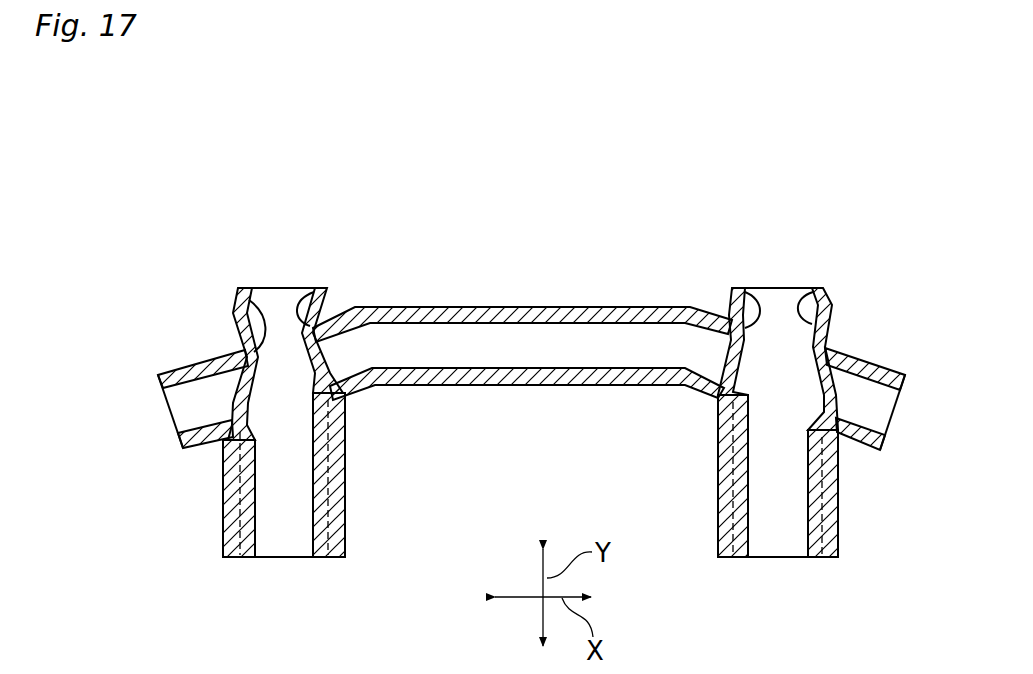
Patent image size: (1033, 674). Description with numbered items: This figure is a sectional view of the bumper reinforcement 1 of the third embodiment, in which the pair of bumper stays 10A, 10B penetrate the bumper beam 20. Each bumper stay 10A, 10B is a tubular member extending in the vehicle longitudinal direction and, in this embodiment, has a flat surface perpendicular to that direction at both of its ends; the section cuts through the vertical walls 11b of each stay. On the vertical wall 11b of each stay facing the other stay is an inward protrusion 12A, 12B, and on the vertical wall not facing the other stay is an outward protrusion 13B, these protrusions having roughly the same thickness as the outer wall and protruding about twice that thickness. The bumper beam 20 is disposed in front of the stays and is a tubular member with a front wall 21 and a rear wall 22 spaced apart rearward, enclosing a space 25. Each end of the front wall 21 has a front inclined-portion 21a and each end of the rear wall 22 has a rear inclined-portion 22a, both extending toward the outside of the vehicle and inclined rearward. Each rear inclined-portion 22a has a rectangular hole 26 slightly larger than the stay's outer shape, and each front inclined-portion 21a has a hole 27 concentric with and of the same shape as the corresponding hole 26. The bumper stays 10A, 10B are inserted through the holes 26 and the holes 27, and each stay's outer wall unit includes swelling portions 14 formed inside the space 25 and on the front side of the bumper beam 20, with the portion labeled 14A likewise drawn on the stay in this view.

The bumper reinforcement 1 is at (226, 210).
The bumper stay 10A is at (349, 500).
The bumper stay 10B is at (714, 510).
The vertical wall 11b is at (245, 558).
The inward protrusion 12A is at (347, 462).
The inward protrusion 12B is at (717, 462).
The outward protrusion 13B is at (840, 510).
The swelling portion 14 is at (238, 290).
The thick wall portion of first pipe member 14A is at (223, 508).
The bumper beam 20 is at (467, 301).
The front wall 21 is at (565, 312).
The rear wall 22 is at (555, 372).
The front inclined-portion 21a is at (158, 366).
The rear inclined-portion 22a is at (183, 440).
The space 25 is at (505, 348).
The hole 26 is at (238, 450).
The hole 27 is at (253, 300).